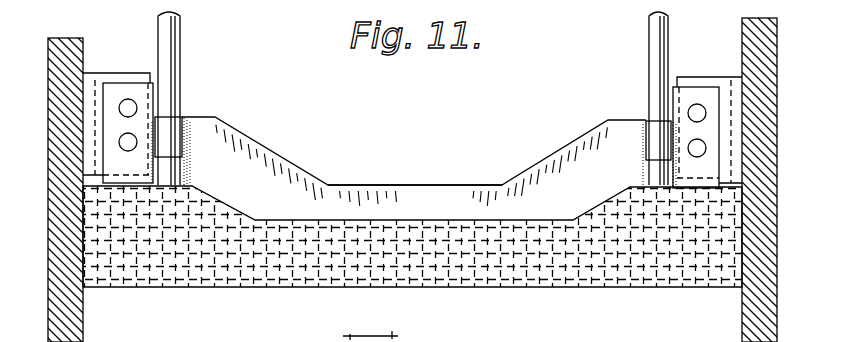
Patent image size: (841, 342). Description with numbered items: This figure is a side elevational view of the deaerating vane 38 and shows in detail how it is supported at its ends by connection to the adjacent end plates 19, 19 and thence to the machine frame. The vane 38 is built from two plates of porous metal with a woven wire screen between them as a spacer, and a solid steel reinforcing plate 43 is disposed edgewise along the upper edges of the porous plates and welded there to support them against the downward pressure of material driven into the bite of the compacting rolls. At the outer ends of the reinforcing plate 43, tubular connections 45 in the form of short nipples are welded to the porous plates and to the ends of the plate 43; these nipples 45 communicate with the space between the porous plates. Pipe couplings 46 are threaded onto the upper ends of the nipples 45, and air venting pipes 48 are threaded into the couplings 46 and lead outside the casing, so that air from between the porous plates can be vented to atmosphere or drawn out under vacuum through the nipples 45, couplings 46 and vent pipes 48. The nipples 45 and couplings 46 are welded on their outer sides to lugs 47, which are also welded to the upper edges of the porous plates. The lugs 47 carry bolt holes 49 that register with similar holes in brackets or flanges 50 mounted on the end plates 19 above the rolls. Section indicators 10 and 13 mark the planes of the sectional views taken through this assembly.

The section line 10- 10 is at (460, 168).
The section line 13- 13 is at (143, 63).
The end plates 19 is at (48, 76).
The deaerating vane 38 is at (323, 290).
The reinforcing plate 43 is at (359, 187).
The tubular connections 45 is at (190, 166).
The pipe couplings 46 is at (190, 131).
The lugs 47 is at (710, 96).
The air venting pipes 48 is at (173, 37).
The bolt holes 49 is at (126, 142).
The brackets or flanges 50 is at (90, 163).